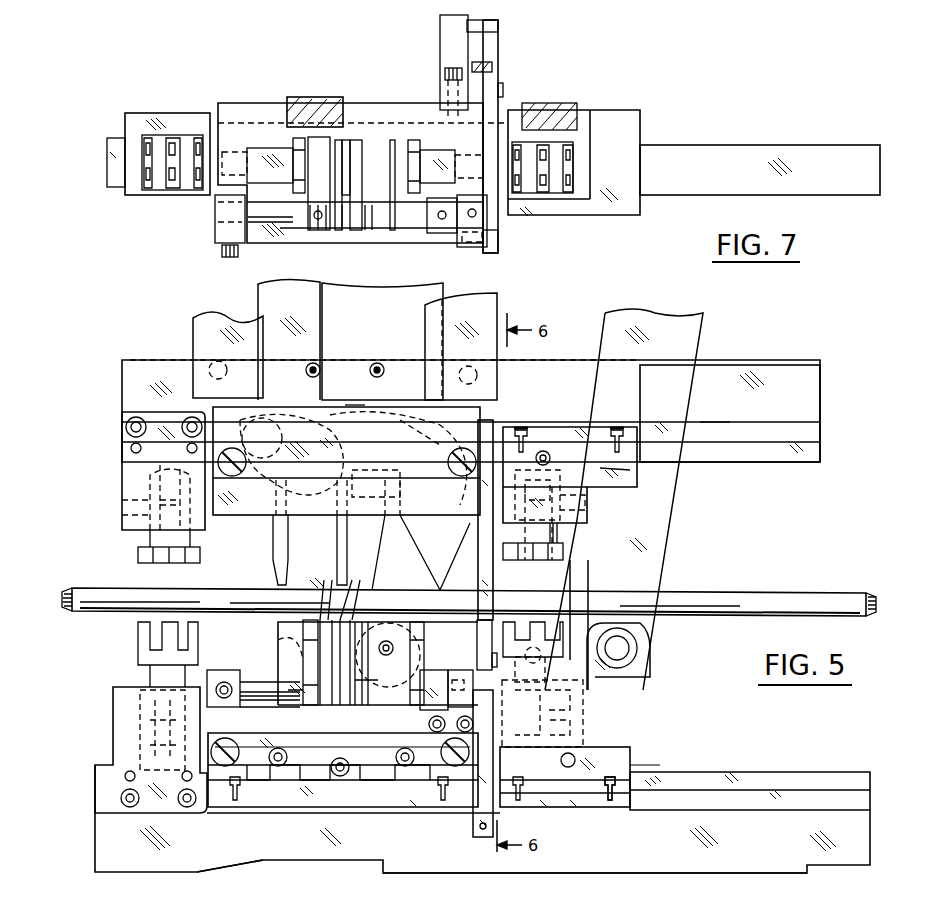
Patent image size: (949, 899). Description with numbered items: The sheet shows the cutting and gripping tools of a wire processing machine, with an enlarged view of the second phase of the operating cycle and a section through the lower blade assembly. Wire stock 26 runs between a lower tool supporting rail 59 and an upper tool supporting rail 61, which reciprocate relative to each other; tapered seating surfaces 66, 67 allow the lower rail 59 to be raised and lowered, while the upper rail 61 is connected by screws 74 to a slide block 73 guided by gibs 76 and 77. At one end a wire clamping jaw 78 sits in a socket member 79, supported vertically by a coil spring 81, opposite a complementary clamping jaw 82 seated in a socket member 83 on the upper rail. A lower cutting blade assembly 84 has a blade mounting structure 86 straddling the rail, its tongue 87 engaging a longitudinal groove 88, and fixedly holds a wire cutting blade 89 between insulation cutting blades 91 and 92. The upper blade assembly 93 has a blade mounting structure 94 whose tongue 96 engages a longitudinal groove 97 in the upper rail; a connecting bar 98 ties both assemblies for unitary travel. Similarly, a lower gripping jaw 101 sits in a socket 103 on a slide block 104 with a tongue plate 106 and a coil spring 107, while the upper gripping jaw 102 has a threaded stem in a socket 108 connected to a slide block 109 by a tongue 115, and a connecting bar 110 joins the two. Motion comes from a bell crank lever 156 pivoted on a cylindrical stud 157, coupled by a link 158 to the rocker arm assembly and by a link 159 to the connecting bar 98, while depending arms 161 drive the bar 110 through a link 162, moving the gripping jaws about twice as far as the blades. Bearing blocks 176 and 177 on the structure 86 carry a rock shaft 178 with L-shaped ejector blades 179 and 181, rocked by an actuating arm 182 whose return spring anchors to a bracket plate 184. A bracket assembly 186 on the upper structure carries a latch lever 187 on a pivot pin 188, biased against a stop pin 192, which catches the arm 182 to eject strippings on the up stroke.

In FIG. 5, the wire stock 26 is at (740, 592).
In FIG. 5, the lower tool supporting rail 59 is at (870, 845).
In FIG. 7, the upper tool supporting rail 61 is at (778, 170).
In FIG. 5, the upper tool supporting rail 61 is at (812, 408).
In FIG. 5, the tapered seating surface 66 is at (242, 866).
In FIG. 5, the tapered seating surface 67 is at (660, 869).
In FIG. 5, the slide block 73 is at (400, 290).
In FIG. 5, the screws 74 is at (372, 366).
In FIG. 5, the gib 76 is at (210, 322).
In FIG. 5, the gib 77 is at (497, 305).
In FIG. 7, the wire clamping jaw 78 is at (160, 190).
In FIG. 5, the wire clamping jaw 78 is at (138, 632).
In FIG. 7, the socket member 79 is at (142, 125).
In FIG. 5, the socket member 79 is at (113, 750).
In FIG. 5, the coil spring 81 is at (150, 700).
In FIG. 5, the complementary clamping jaw 82 is at (138, 553).
In FIG. 5, the socket member 83 is at (120, 475).
In FIG. 7, the lower cutting blade assembly 84 is at (230, 187).
In FIG. 5, the lower cutting blade assembly 84 is at (305, 777).
In FIG. 5, the blade mounting structure 86 is at (350, 800).
In FIG. 5, the tongue 87 is at (385, 800).
In FIG. 5, the longitudinal groove 88 is at (870, 797).
In FIG. 7, the wire cutting blade 89 is at (350, 195).
In FIG. 5, the wire cutting blade 89 is at (358, 705).
In FIG. 7, the insulation cutting blade 91 is at (292, 143).
In FIG. 5, the insulation cutting blade 91 is at (300, 655).
In FIG. 7, the insulation cutting blade 92 is at (420, 150).
In FIG. 5, the insulation cutting blade 92 is at (410, 700).
In FIG. 5, the upper blade assembly 93 is at (268, 525).
In FIG. 5, the blade mounting structure 94 is at (260, 501).
In FIG. 5, the tongue 96 is at (482, 420).
In FIG. 5, the longitudinal groove 97 is at (716, 420).
In FIG. 7, the connecting bar 98 is at (308, 96).
In FIG. 5, the connecting bar 98 is at (278, 628).
In FIG. 7, the lower gripping jaw 101 is at (570, 166).
In FIG. 5, the lower gripping jaw 101 is at (535, 622).
In FIG. 5, the upper gripping jaw 102 is at (563, 553).
In FIG. 5, the socket 103 is at (583, 735).
In FIG. 5, the slide block 104 is at (632, 762).
In FIG. 5, the tongue plate 106 is at (592, 800).
In FIG. 5, the coil spring 107 is at (583, 698).
In FIG. 5, the socket 108 is at (580, 500).
In FIG. 5, the slide block 109 is at (630, 470).
In FIG. 7, the connecting bar 110 is at (555, 108).
In FIG. 5, the connecting bar 110 is at (588, 573).
In FIG. 5, the tongue 115 is at (558, 432).
In FIG. 5, the bell crank lever 156 is at (355, 405).
In FIG. 5, the cylindrical stud 157 is at (425, 415).
In FIG. 5, the link 158 is at (322, 290).
In FIG. 5, the link 159 is at (400, 640).
In FIG. 5, the depending arms 161 is at (700, 340).
In FIG. 5, the link 162 is at (632, 658).
In FIG. 5, the bearing block 176 is at (265, 705).
In FIG. 5, the bearing block 177 is at (440, 695).
In FIG. 7, the rock shaft 178 is at (270, 222).
In FIG. 5, the rock shaft 178 is at (262, 683).
In FIG. 7, the L-shaped ejector blades 179 is at (320, 140).
In FIG. 5, the L-shaped ejector blades 179 is at (318, 620).
In FIG. 7, the L-shaped ejector blades 181 is at (355, 160).
In FIG. 5, the L-shaped ejector blades 181 is at (350, 618).
In FIG. 7, the actuating arm 182 is at (500, 247).
In FIG. 5, the bracket plate 184 is at (475, 825).
In FIG. 7, the bracket assembly 186 is at (430, 68).
In FIG. 7, the latch lever 187 is at (499, 50).
In FIG. 5, the latch lever 187 is at (477, 633).
In FIG. 7, the pivot pin 188 is at (505, 90).
In FIG. 5, the pivot pin 188 is at (490, 658).
In FIG. 7, the stop pin 192 is at (499, 25).